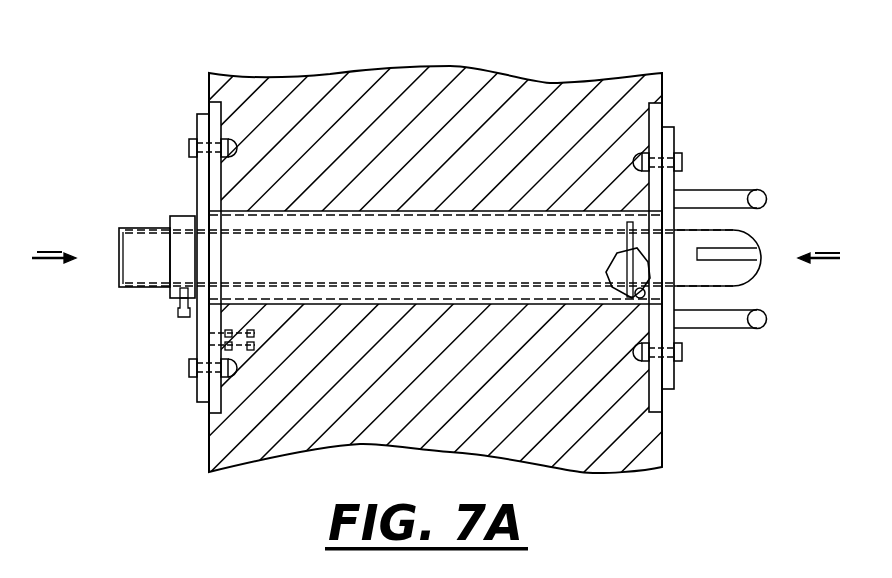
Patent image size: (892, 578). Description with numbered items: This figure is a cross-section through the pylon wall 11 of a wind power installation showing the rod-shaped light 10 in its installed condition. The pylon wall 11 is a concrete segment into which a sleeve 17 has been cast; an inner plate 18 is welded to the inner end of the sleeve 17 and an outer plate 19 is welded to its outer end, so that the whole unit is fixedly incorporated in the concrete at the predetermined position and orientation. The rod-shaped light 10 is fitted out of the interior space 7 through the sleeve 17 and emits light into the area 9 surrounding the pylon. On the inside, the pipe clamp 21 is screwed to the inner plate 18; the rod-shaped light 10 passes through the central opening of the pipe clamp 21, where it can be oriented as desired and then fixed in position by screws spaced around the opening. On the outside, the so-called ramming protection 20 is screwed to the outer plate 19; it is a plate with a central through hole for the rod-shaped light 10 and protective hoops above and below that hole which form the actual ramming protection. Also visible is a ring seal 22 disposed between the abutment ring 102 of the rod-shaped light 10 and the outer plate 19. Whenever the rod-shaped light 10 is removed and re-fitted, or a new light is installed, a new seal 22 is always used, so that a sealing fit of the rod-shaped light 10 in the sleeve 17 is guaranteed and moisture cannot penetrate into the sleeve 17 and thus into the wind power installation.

The rod-shaped light 10 is at (434, 277).
The pylon wall 11 is at (440, 78).
The sleeve 17 is at (387, 304).
The inner plate 18 is at (212, 108).
The outer plate 19 is at (655, 117).
The ramming protection 20 is at (672, 138).
The pipe clamp 21 is at (200, 186).
The ring seal 22 is at (648, 296).
The abutment ring 102 is at (625, 247).
The interior space 7 is at (37, 312).
The area surrounding the pylon 9 is at (863, 316).